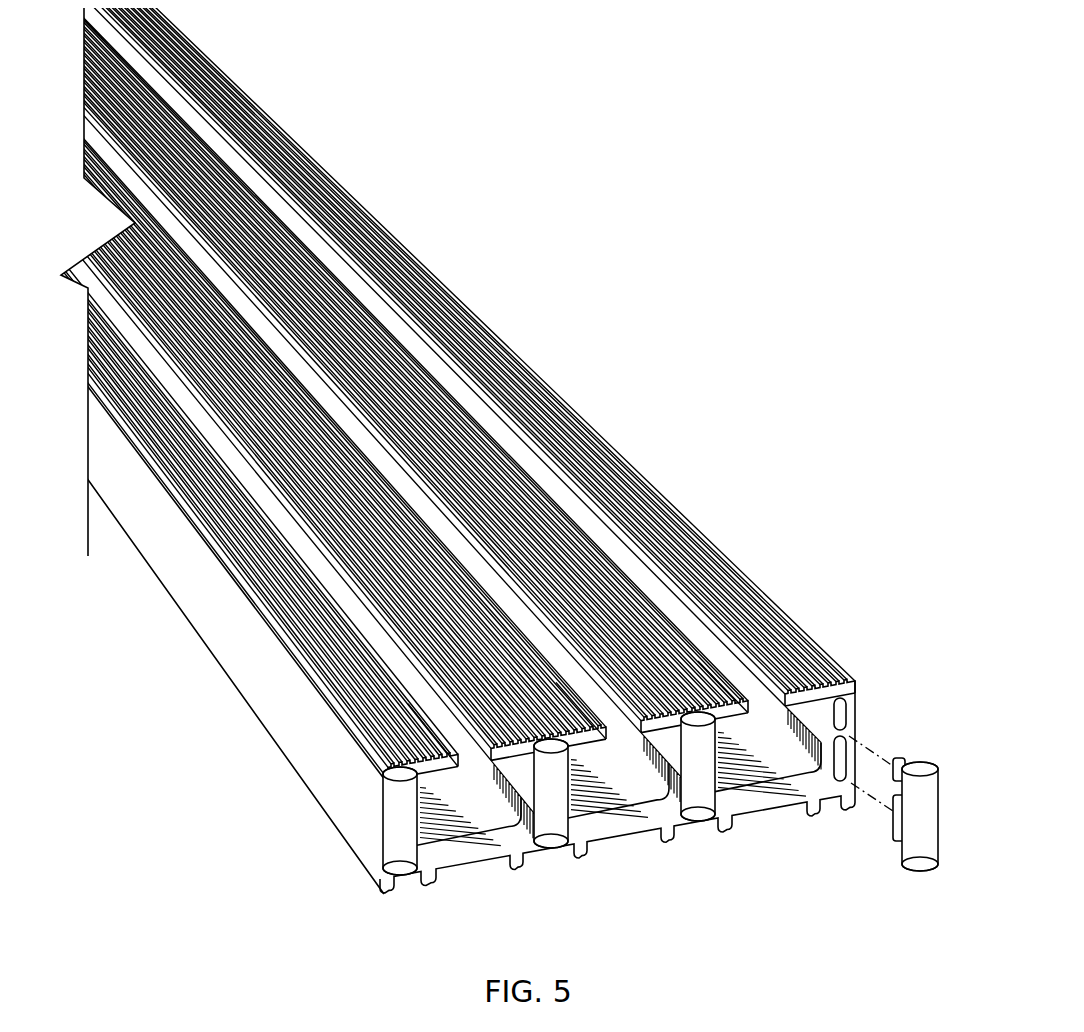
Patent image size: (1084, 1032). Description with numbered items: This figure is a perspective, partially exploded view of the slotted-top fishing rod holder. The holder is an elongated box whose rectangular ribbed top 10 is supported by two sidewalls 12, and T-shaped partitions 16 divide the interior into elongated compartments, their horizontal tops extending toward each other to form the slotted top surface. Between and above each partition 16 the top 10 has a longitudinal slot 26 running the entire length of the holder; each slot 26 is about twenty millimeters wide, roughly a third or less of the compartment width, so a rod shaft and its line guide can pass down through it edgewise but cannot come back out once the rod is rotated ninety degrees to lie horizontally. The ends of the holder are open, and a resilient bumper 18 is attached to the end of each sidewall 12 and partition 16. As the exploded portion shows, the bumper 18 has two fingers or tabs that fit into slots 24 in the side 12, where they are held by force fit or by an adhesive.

The ribbed top 10 is at (597, 470).
The sidewall 12 is at (323, 765).
The partition 16 is at (658, 767).
The resilient bumper 18 is at (908, 818).
The slots 24 is at (831, 747).
The longitudinal slot 26 is at (453, 387).